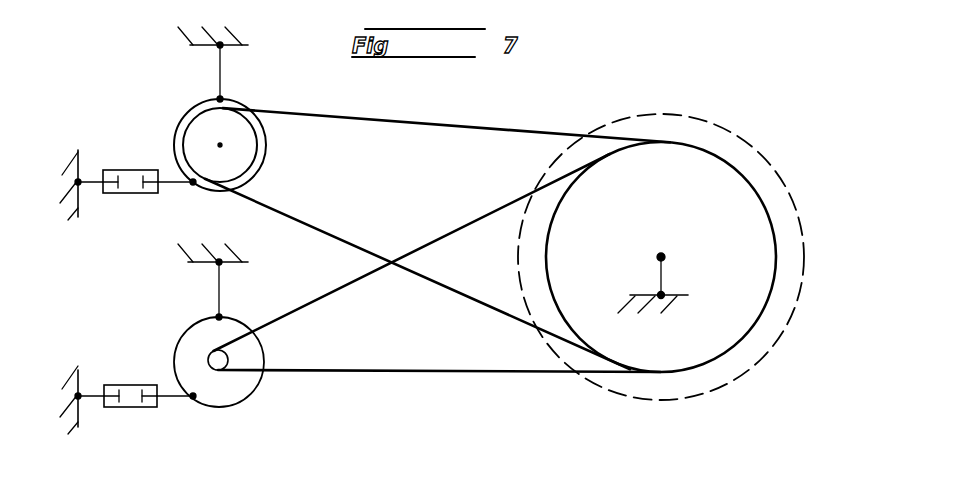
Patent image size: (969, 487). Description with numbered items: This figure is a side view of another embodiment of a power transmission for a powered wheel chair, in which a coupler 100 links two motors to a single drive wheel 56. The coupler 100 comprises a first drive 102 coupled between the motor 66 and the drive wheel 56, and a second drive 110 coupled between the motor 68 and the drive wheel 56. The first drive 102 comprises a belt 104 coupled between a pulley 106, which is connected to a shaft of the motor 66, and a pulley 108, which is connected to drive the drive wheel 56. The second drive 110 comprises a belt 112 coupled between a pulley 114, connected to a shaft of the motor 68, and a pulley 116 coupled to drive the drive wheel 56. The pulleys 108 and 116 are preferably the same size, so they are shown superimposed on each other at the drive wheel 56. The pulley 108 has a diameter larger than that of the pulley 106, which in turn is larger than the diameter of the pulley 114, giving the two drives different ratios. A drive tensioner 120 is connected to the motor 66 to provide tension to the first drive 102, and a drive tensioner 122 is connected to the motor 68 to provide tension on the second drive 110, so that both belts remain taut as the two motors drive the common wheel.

The drive wheel 56 is at (748, 155).
The motor 66 is at (185, 117).
The motor 68 is at (192, 350).
The coupler 100 is at (410, 396).
The first drive 102 is at (483, 123).
The belt 104 is at (340, 238).
The pulley 106 is at (240, 160).
The pulley 108 is at (757, 188).
The second drive 110 is at (452, 379).
The belt 112 is at (305, 308).
The pulley 114 is at (221, 373).
The pulley 116 is at (727, 327).
The drive tensioner 120 is at (132, 191).
The drive tensioner 122 is at (125, 407).